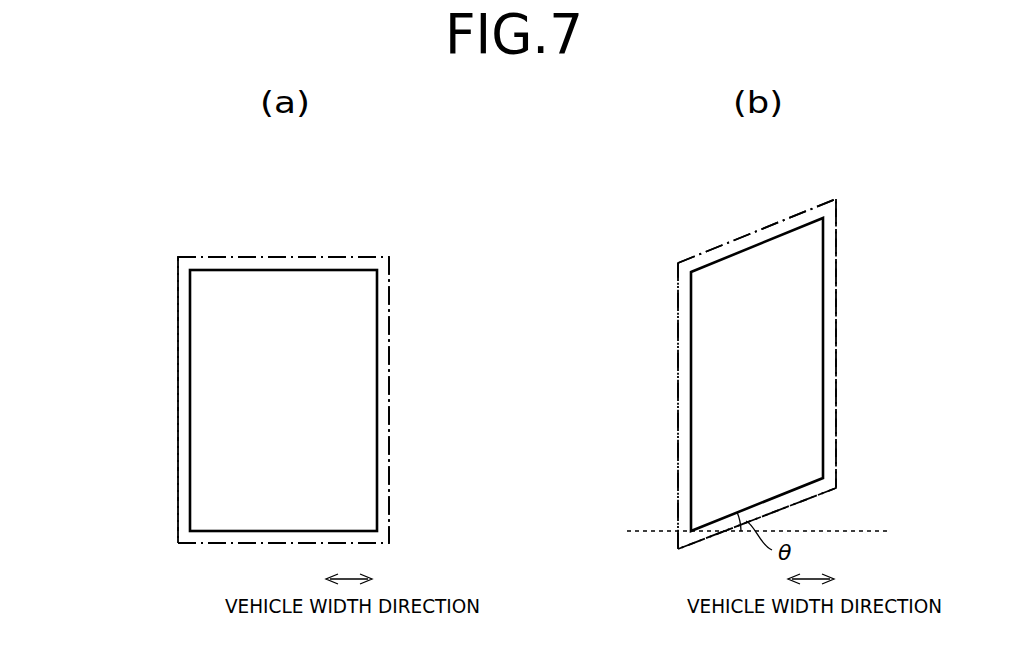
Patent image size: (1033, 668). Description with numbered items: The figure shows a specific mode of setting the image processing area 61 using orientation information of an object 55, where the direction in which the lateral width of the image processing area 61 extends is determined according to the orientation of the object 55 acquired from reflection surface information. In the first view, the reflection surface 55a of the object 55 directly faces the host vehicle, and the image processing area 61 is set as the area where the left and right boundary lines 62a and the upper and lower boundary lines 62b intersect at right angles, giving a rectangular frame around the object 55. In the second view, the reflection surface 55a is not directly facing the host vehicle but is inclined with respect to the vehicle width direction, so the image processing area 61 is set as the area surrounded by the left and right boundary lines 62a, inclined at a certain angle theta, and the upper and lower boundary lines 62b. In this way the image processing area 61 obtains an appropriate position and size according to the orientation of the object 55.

The object 55 is at (376, 343).
The reflection surface 55a is at (343, 440).
The image processing area 61 is at (390, 294).
The left and right boundary lines 62a is at (312, 257).
The upper and lower boundary lines 62b is at (178, 276).